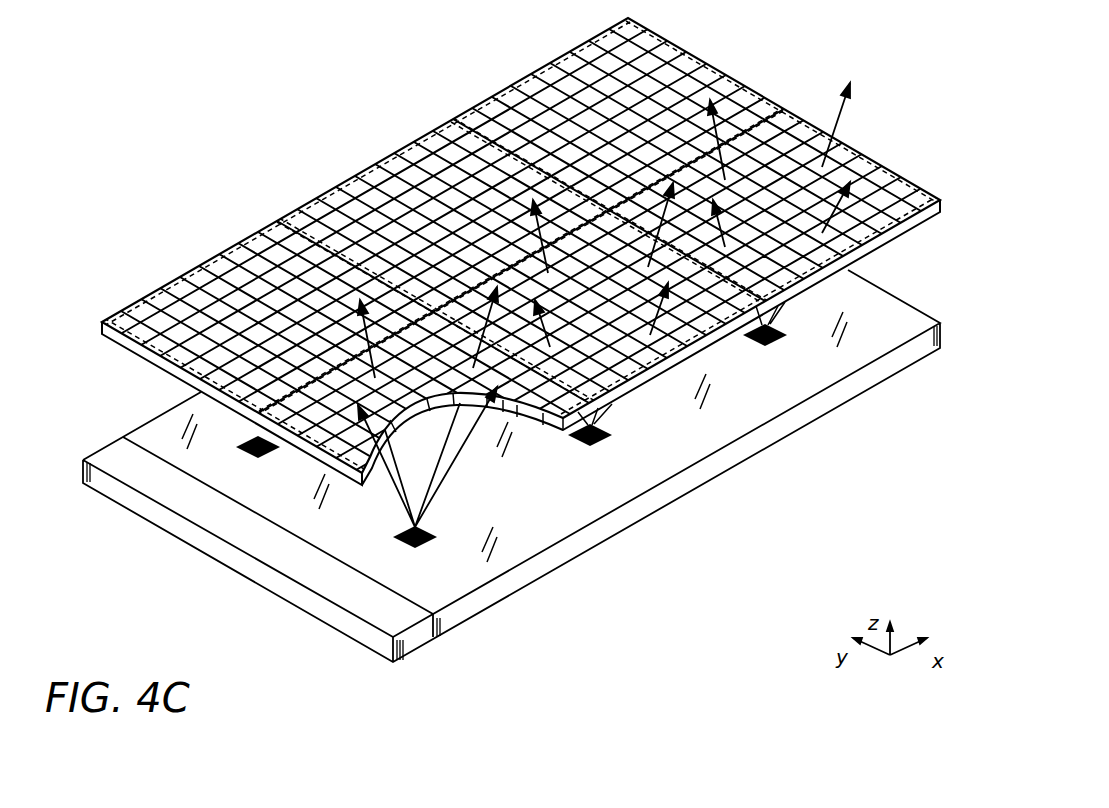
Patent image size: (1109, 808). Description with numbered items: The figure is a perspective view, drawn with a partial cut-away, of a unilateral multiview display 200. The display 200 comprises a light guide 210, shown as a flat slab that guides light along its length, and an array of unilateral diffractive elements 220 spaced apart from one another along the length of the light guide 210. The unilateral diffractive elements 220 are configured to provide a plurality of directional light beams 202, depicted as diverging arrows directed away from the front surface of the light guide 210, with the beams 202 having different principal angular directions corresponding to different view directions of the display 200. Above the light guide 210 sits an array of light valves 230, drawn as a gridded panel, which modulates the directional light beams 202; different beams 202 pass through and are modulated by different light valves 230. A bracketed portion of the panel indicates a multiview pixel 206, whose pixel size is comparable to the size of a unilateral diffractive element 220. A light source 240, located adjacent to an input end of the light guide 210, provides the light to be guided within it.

The unilateral multiview display 200 is at (238, 113).
The directional light beams 202 is at (870, 102).
The multiview pixel 206 is at (262, 221).
The light guide 210 is at (712, 467).
The unilateral diffractive elements 220 is at (780, 343).
The array of light valves 230 is at (260, 243).
The light source 240 is at (223, 553).